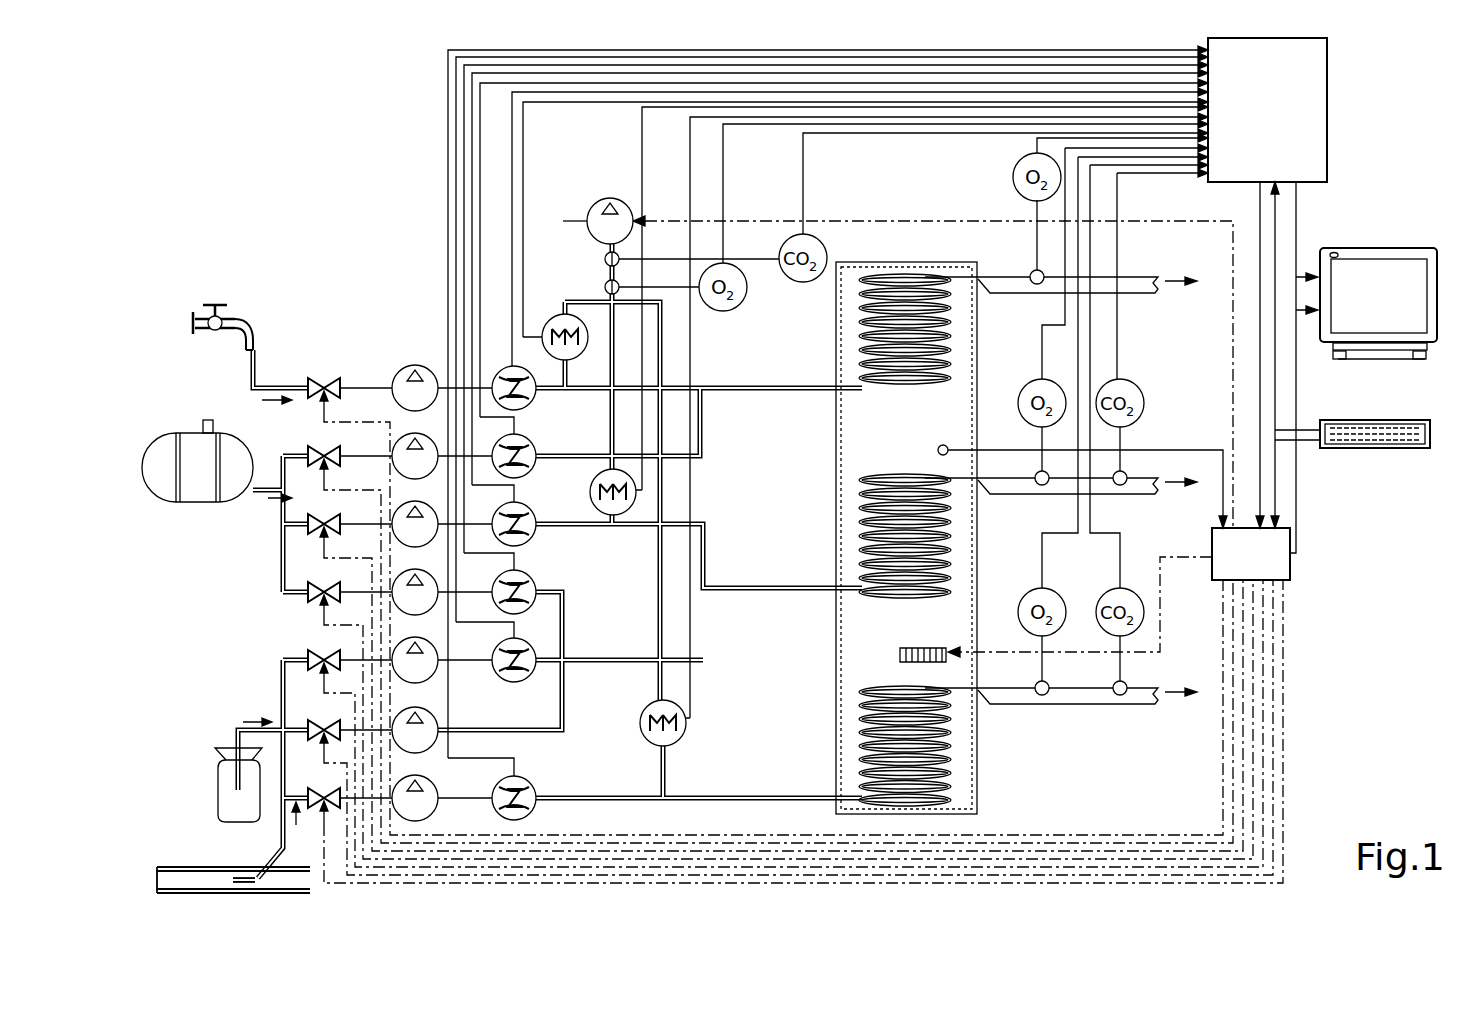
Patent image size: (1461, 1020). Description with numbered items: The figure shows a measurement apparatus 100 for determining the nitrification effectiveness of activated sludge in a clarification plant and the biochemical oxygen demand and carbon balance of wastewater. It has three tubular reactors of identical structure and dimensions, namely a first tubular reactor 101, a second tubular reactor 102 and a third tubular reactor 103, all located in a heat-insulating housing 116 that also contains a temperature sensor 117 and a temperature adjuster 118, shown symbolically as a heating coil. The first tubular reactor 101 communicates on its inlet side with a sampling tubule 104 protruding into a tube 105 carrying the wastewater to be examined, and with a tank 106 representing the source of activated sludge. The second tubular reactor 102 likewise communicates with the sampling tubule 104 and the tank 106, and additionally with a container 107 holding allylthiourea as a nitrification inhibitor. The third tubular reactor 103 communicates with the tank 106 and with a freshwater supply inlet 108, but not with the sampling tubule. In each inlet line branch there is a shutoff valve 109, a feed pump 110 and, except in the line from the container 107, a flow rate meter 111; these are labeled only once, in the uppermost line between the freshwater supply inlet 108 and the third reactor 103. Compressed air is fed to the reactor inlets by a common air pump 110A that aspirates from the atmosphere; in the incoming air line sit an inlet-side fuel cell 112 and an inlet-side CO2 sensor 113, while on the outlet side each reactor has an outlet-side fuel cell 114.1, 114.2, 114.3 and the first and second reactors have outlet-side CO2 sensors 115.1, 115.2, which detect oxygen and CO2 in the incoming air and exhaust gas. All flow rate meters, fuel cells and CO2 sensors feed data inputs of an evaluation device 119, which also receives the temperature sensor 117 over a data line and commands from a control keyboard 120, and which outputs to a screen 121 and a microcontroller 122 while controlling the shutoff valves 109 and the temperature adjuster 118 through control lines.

The measurement apparatus 100 is at (406, 118).
The first tubular reactor 101 is at (890, 598).
The second tubular reactor 102 is at (858, 711).
The third tubular reactor 103 is at (912, 382).
The sampling tubule 104 is at (283, 893).
The tube 105 is at (190, 867).
The tank 106 is at (200, 502).
The container 107 is at (228, 748).
The freshwater supply inlet 108 is at (202, 318).
The shutoff valve 109 is at (322, 376).
The feed pump 110 is at (400, 368).
The air pump 110A is at (627, 198).
The flow rate meter 111 is at (496, 370).
The inlet-side fuel cell 112 is at (745, 268).
The inlet-side CO2 sensor 113 is at (822, 238).
The outlet-side fuel cell 114.1 is at (1062, 385).
The outlet-side fuel cell 114.2 is at (1058, 634).
The outlet-side fuel cell 114.3 is at (1015, 177).
The outlet-side CO2 sensor 115.1 is at (1132, 381).
The outlet-side CO2 sensor 115.2 is at (1138, 634).
The heat-insulating housing 116 is at (916, 262).
The temperature sensor 117 is at (938, 450).
The temperature adjuster 118 is at (900, 653).
The evaluation device 119 is at (1327, 80).
The control keyboard 120 is at (1375, 448).
The screen 121 is at (1388, 248).
The microcontroller 122 is at (1290, 568).